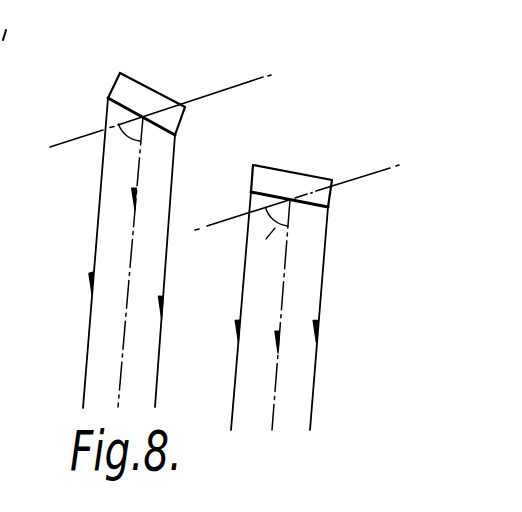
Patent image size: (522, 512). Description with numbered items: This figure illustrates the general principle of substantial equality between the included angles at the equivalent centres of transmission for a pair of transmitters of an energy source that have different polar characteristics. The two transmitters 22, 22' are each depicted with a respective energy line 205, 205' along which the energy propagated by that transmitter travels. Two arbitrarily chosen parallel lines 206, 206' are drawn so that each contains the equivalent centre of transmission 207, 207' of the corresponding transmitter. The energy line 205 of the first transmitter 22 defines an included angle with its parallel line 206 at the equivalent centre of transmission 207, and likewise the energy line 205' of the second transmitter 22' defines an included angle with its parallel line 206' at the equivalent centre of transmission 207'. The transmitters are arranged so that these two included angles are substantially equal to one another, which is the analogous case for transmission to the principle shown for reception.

The transmitter 22 is at (146, 81).
The energy line 205 is at (95, 253).
The parallel line 206 is at (145, 111).
The equivalent centre of transmission 207 is at (186, 116).
The transmitter 22' is at (291, 169).
The energy line 205' is at (311, 311).
The parallel line 206' is at (290, 228).
The equivalent centre of transmission 207' is at (331, 163).